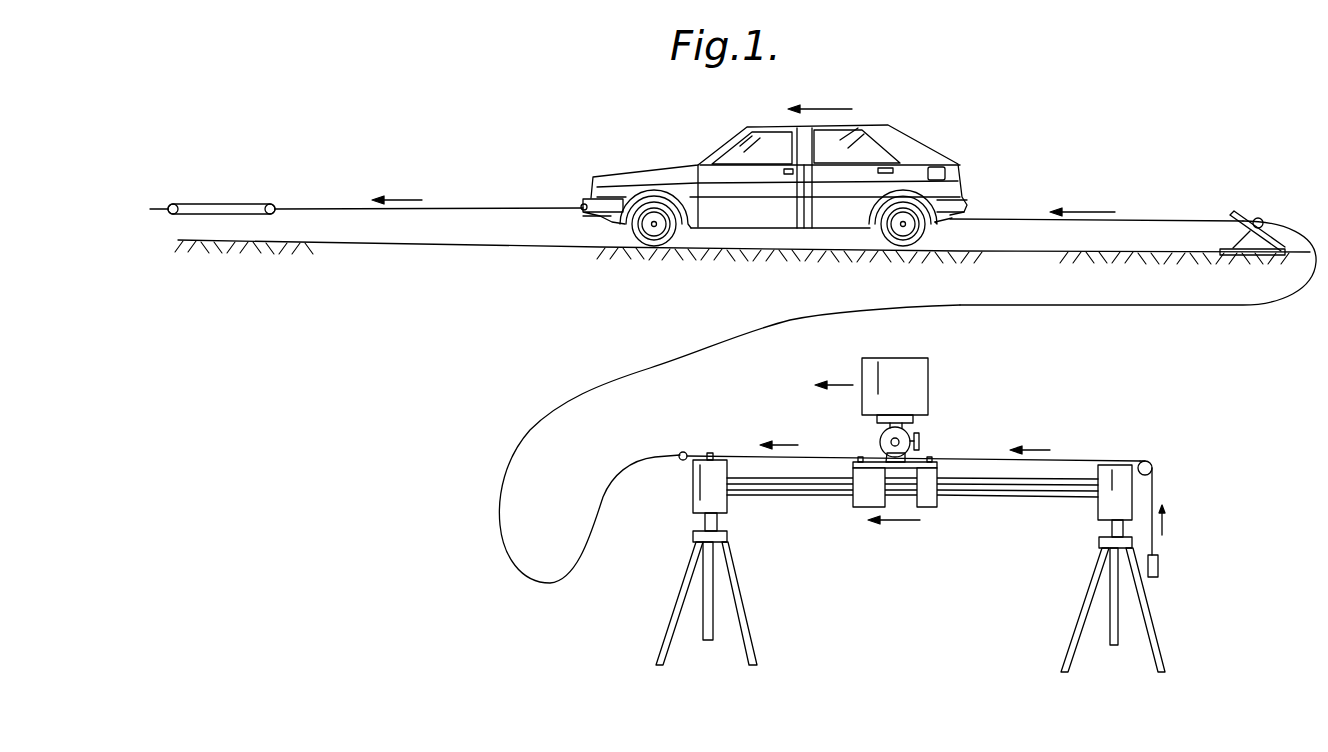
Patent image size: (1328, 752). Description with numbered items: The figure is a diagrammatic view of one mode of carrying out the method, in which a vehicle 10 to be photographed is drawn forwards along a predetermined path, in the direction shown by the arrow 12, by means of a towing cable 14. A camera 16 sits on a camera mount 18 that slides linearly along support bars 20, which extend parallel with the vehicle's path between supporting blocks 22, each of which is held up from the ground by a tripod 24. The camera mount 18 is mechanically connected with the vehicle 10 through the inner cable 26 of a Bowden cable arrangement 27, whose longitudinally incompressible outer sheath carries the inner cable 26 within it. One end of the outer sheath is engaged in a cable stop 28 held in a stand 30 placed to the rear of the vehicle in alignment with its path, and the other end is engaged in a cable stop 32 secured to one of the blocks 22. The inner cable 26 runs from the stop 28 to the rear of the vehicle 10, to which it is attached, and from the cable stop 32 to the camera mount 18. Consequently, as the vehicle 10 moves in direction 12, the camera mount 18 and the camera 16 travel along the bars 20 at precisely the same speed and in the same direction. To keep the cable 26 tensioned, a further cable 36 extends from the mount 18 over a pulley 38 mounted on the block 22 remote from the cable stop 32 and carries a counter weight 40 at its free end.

The vehicle 10 is at (930, 164).
The arrow 12 is at (1094, 215).
The towing cable 14 is at (498, 206).
The camera 16 is at (921, 384).
The camera mount 18 is at (917, 462).
The support bars 20 is at (770, 489).
The supporting blocks 22 is at (700, 497).
The tripods 24 is at (685, 582).
The inner cable 26 is at (1163, 219).
The Bowden cable arrangement 27 is at (606, 373).
The cable stop 28 is at (1258, 218).
The stand 30 is at (1284, 240).
The cable stop 32 is at (683, 452).
The further cable 36 is at (1067, 459).
The pulley 38 is at (1148, 462).
The counter weight 40 is at (1160, 566).